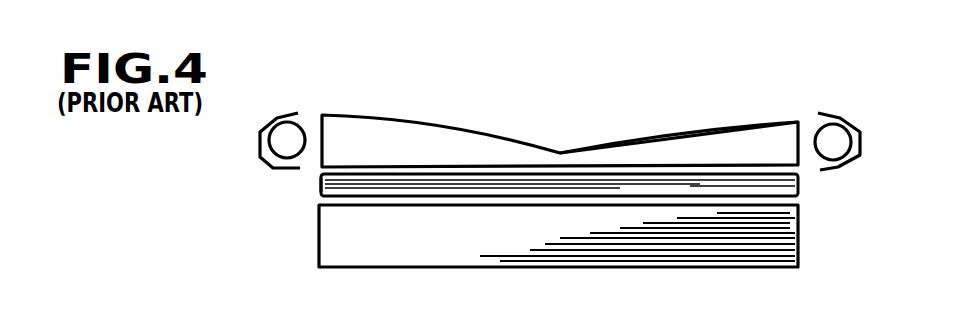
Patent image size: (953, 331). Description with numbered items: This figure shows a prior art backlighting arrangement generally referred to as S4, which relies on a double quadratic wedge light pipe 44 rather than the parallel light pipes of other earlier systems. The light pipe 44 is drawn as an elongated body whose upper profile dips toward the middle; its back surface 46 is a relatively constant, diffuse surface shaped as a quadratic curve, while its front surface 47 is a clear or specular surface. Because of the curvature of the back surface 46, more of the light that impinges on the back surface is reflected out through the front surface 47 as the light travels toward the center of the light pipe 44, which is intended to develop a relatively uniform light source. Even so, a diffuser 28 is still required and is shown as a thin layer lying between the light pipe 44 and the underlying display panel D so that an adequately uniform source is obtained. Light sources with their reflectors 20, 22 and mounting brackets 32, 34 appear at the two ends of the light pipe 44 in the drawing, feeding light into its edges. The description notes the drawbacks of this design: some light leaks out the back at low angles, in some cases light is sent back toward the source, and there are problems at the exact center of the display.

The back surface 46 is at (441, 123).
The double quadratic wedge light pipe 44 is at (643, 132).
The diffuser 28 is at (800, 191).
The front surface 47 is at (318, 178).
The base plate D is at (800, 250).
The left roller 20 is at (270, 140).
The left roller bracket 32 is at (258, 168).
The right roller 22 is at (853, 122).
The right roller bracket 34 is at (861, 142).
The alternative prior art light pipe design S4 is at (278, 243).